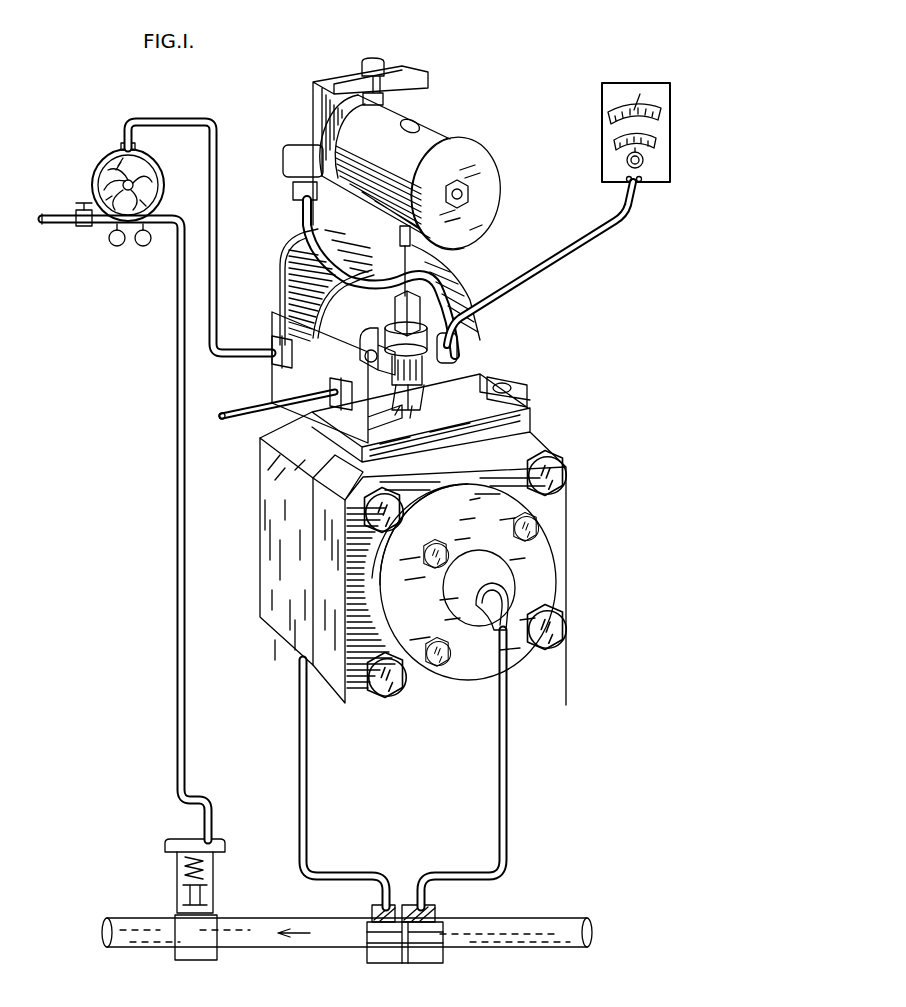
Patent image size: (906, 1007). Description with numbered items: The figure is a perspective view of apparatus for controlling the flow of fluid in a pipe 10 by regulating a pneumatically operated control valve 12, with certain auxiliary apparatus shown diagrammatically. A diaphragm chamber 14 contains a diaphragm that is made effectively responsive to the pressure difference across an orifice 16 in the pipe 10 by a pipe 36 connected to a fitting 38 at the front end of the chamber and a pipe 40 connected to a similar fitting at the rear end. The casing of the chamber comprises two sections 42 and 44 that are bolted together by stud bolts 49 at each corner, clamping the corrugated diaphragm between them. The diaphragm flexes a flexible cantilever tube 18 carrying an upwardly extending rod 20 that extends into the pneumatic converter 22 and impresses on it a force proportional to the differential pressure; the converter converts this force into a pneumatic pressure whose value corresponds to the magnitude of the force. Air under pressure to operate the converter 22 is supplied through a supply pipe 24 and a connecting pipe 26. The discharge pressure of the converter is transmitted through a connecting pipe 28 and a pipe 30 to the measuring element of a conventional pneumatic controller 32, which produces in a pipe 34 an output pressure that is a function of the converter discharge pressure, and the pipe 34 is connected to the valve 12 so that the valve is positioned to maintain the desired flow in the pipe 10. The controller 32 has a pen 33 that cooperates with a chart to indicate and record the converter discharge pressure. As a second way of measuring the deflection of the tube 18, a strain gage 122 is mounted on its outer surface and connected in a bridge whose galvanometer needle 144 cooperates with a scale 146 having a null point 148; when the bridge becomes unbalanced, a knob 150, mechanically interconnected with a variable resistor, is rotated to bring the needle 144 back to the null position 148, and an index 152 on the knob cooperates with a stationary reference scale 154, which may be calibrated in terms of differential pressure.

The pipe 10 is at (540, 940).
The pneumatically operated control valve 12 is at (175, 870).
The diaphragm chamber 14 is at (567, 530).
The orifice 16 is at (405, 945).
The flexible cantilever tube 18 is at (380, 342).
The rod 20 is at (409, 262).
The pneumatic converter 22 is at (483, 178).
The supply pipe 24 is at (240, 420).
The connecting pipe 26 is at (303, 217).
The connecting pipe 28 is at (330, 303).
The pipe 30 is at (217, 272).
The pneumatic controller 32 is at (110, 172).
The pen 33 is at (118, 192).
The pipe 34 is at (176, 445).
The pipe 36 is at (508, 773).
The fitting 38 is at (510, 600).
The pipe 40 is at (308, 790).
The casing section 42 is at (335, 680).
The casing section 44 is at (265, 540).
The stud bolts 49 is at (562, 480).
The strain gage 122 is at (426, 385).
The needle 144 is at (604, 103).
The scale 146 is at (662, 115).
The zero or null point 148 is at (640, 94).
The knob 150 is at (627, 160).
The index 152 is at (644, 160).
The stationary reference scale 154 is at (657, 141).